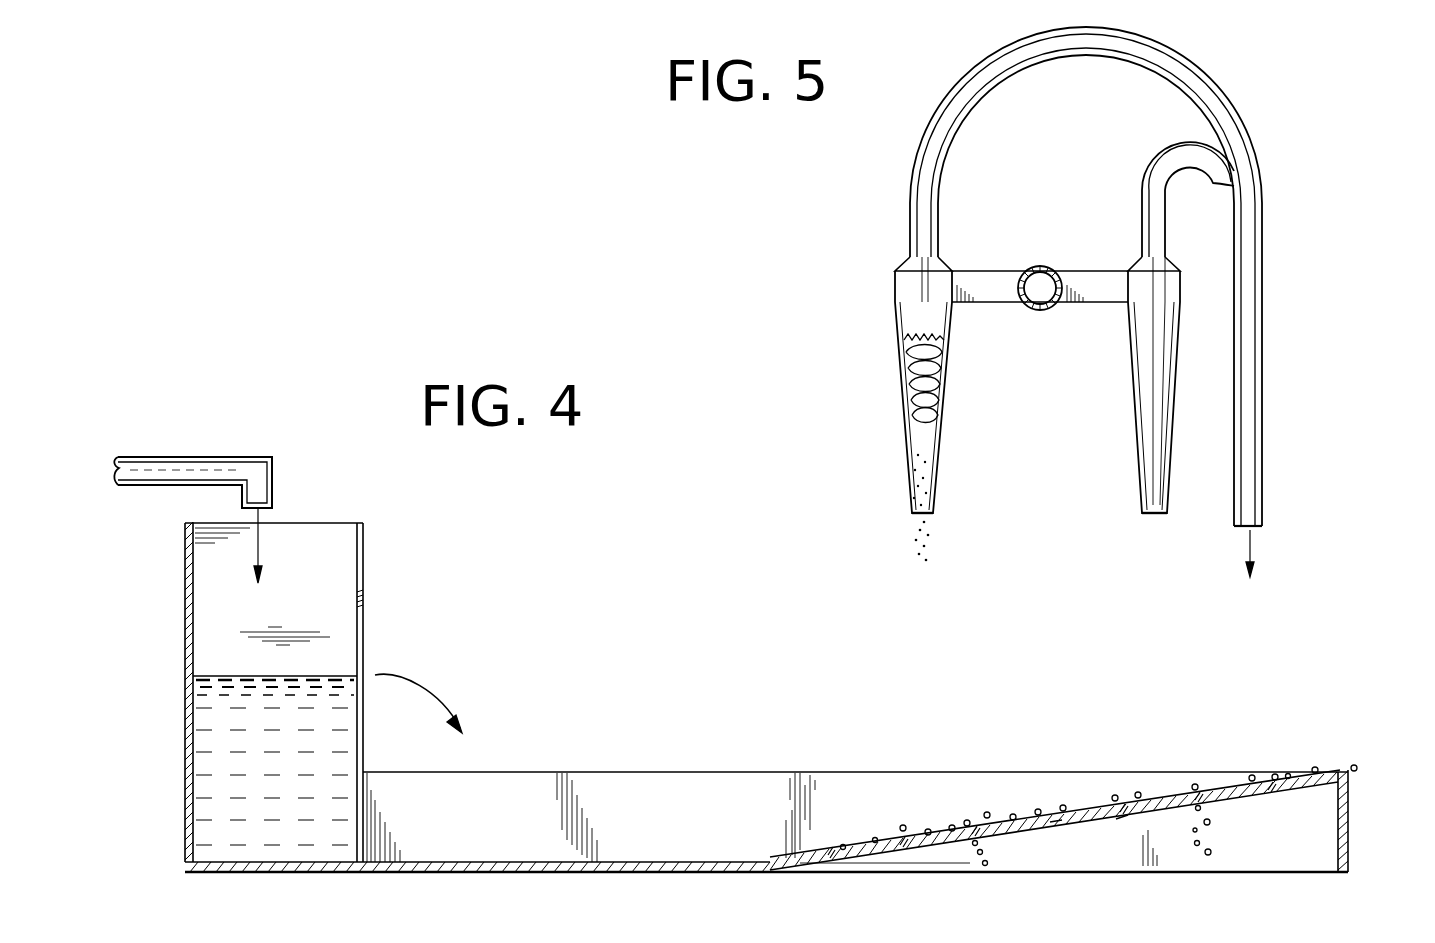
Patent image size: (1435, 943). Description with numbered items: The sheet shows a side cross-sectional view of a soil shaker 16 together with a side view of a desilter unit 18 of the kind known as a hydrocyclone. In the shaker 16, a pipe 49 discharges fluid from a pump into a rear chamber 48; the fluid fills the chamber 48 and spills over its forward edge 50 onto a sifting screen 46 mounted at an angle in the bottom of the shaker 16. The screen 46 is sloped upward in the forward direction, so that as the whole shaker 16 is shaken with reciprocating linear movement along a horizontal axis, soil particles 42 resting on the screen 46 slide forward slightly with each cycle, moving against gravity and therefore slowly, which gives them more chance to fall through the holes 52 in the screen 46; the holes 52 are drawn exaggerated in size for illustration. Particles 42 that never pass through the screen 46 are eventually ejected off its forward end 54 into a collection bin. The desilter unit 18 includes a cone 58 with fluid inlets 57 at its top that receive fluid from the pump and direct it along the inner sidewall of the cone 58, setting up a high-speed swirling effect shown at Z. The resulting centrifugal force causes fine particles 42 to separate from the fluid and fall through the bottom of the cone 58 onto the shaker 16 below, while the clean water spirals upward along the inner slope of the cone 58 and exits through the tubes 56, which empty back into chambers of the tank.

In FIG. 4, the shaker 16 is at (735, 757).
In FIG. 5, the desilter unit 18 is at (1268, 138).
In FIG. 4, the soil particles 42 is at (1012, 812).
In FIG. 5, the soil particles 42 is at (928, 473).
In FIG. 4, the screen 46 is at (1160, 800).
In FIG. 4, the rear chamber 48 is at (363, 588).
In FIG. 4, the pipe 49 is at (188, 474).
In FIG. 4, the forward edge 50 is at (363, 676).
In FIG. 4, the holes 52 is at (1123, 817).
In FIG. 4, the forward end 54 is at (1357, 767).
In FIG. 5, the tubes 56 is at (1208, 76).
In FIG. 5, the fluid inlets 57 is at (1080, 271).
In FIG. 5, the cones 58 is at (905, 375).
In FIG. 5, the swirling effect Z is at (940, 386).